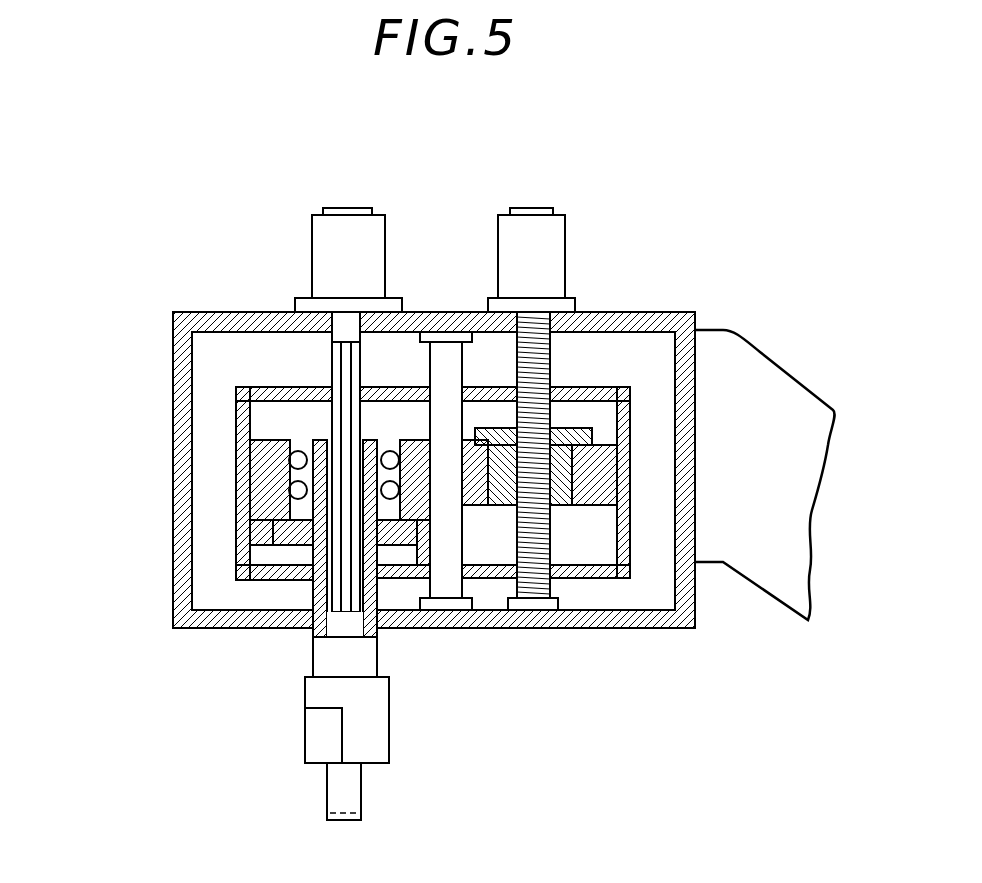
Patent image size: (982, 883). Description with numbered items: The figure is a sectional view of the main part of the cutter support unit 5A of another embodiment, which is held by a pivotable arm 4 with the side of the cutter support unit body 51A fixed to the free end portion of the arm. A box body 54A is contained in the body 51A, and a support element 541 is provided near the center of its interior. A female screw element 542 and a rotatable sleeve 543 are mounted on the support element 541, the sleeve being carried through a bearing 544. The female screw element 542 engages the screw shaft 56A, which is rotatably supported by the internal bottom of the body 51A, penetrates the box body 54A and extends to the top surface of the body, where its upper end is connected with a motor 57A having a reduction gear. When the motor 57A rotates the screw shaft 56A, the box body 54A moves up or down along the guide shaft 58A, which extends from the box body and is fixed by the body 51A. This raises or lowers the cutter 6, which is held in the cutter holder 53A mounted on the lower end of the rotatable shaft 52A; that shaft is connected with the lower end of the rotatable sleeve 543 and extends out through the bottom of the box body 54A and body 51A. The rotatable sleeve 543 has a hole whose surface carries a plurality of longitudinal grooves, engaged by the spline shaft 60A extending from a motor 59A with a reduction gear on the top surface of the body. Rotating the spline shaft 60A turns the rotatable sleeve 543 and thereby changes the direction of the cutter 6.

The cutter support unit 5A is at (250, 257).
The pivotable arm 4 is at (775, 362).
The cutter support unit body 51A is at (173, 348).
The rotatable shaft 52A is at (313, 650).
The cutter holder 53A is at (305, 720).
The box body 54A is at (236, 445).
The support element 541 is at (253, 480).
The female screw element 542 is at (573, 427).
The rotatable sleeve 543 is at (275, 530).
The bearing 544 is at (293, 497).
The screw shaft 56A is at (552, 583).
The motor 57A is at (567, 228).
The guide shaft 58A is at (465, 583).
The motor 59A is at (380, 217).
The spline shaft 60A is at (332, 372).
The cutter 6 is at (327, 797).